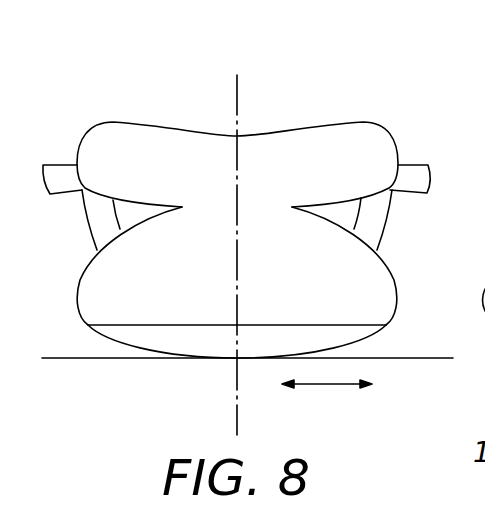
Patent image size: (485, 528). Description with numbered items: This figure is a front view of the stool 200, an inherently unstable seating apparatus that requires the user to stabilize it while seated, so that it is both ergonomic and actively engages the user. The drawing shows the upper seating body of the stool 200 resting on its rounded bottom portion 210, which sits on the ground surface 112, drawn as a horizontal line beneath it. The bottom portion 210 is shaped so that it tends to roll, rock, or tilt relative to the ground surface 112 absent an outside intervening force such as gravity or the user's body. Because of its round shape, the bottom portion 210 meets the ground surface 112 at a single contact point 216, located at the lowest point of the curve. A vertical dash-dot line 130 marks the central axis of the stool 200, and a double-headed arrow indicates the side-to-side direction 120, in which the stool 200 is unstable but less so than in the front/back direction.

The stool 200 is at (404, 106).
The bottom portion 210 is at (237, 299).
The contact point 216 is at (233, 360).
The central axis 130 is at (238, 90).
The ground surface 112 is at (58, 358).
The side-to-side direction 120 is at (325, 386).